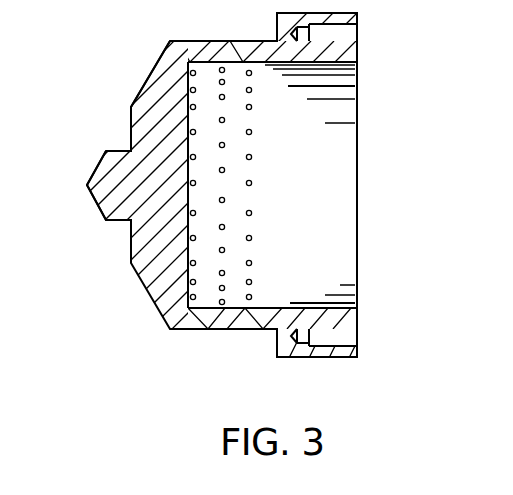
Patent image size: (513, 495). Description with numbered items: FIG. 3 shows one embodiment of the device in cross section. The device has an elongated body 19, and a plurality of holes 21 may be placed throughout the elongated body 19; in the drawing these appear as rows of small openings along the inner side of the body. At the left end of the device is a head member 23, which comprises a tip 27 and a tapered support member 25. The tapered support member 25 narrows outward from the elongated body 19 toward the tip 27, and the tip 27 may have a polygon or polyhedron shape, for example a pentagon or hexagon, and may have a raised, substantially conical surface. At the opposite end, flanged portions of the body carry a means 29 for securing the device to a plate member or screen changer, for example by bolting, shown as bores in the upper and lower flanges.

The elongated body 19 is at (337, 158).
The plurality of holes 21 is at (253, 238).
The head member 23 is at (157, 63).
The tapered support member 25 is at (125, 151).
The tip 27 is at (92, 175).
The means for securing 29 is at (350, 33).